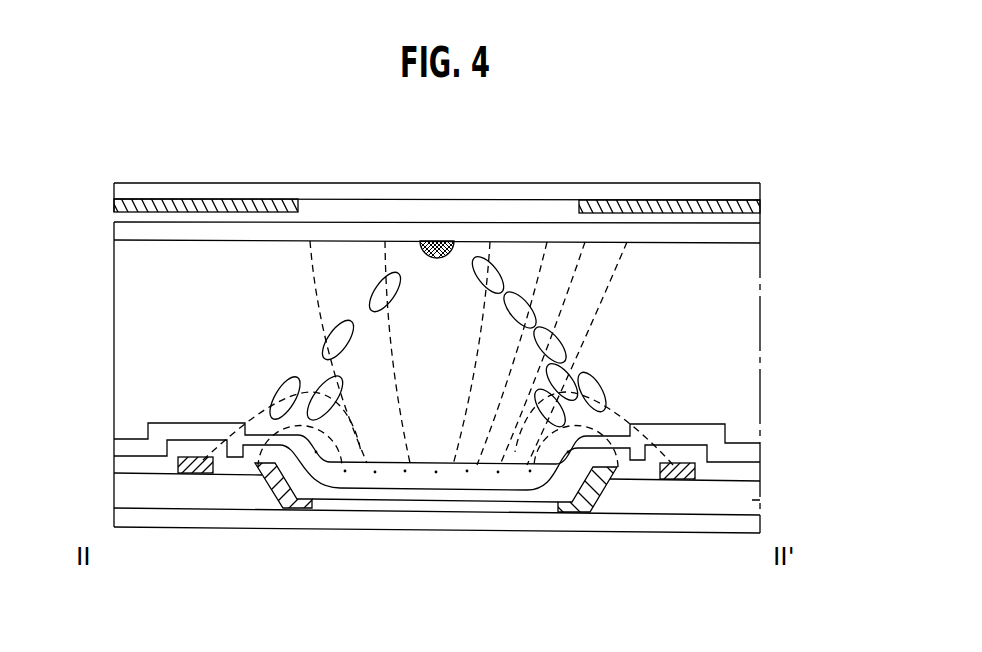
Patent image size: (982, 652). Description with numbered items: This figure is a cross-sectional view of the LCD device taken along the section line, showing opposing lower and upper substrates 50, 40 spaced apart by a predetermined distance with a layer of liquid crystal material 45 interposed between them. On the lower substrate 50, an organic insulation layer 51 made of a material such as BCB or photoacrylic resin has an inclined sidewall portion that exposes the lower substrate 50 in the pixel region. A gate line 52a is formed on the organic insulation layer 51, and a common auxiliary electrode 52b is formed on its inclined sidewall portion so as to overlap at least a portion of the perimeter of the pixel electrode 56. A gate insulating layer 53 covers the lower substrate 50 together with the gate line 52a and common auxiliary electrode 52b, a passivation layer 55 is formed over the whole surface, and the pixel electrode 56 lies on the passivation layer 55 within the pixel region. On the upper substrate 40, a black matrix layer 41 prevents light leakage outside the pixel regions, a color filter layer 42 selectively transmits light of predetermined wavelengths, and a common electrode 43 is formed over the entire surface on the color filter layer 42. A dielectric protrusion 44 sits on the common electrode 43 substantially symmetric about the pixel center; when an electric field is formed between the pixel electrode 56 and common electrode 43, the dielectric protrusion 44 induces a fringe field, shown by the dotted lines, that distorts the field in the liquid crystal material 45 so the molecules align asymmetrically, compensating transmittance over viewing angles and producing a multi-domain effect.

The upper substrate 40 is at (114, 190).
The black matrix layer 41 is at (757, 205).
The color filter layer 42 is at (762, 223).
The common electrode 43 is at (114, 231).
The dielectric protrusion 44 is at (437, 258).
The layer of liquid crystal material 45 is at (760, 355).
The lower substrate 50 is at (760, 523).
The organic insulation layer 51 is at (757, 500).
The gate line 52a is at (195, 473).
The common auxiliary electrode 52b is at (299, 508).
The gate insulating layer 53 is at (382, 503).
The passivation layer 55 is at (441, 492).
The pixel electrode 56 is at (500, 478).